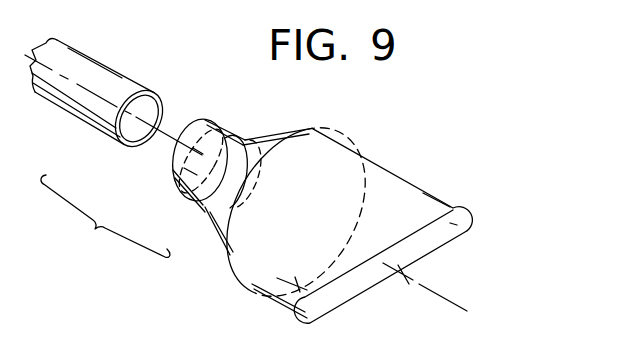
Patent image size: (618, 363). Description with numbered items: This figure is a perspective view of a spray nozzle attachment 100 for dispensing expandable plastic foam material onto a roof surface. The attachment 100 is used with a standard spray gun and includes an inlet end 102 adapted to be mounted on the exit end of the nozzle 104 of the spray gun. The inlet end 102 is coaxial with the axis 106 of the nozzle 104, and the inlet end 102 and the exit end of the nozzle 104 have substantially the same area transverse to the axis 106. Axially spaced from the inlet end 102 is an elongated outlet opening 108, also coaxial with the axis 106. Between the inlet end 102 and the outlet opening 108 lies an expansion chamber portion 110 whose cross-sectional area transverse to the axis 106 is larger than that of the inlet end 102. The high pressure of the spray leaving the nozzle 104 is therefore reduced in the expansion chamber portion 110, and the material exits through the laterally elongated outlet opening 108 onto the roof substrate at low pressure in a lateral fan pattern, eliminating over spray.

The nozzle attachment 100 is at (390, 140).
The inlet end 102 is at (202, 118).
The nozzle 104 is at (128, 85).
The axis 106 is at (172, 140).
The outlet opening 108 is at (440, 243).
The expansion chamber portion 110 is at (318, 156).